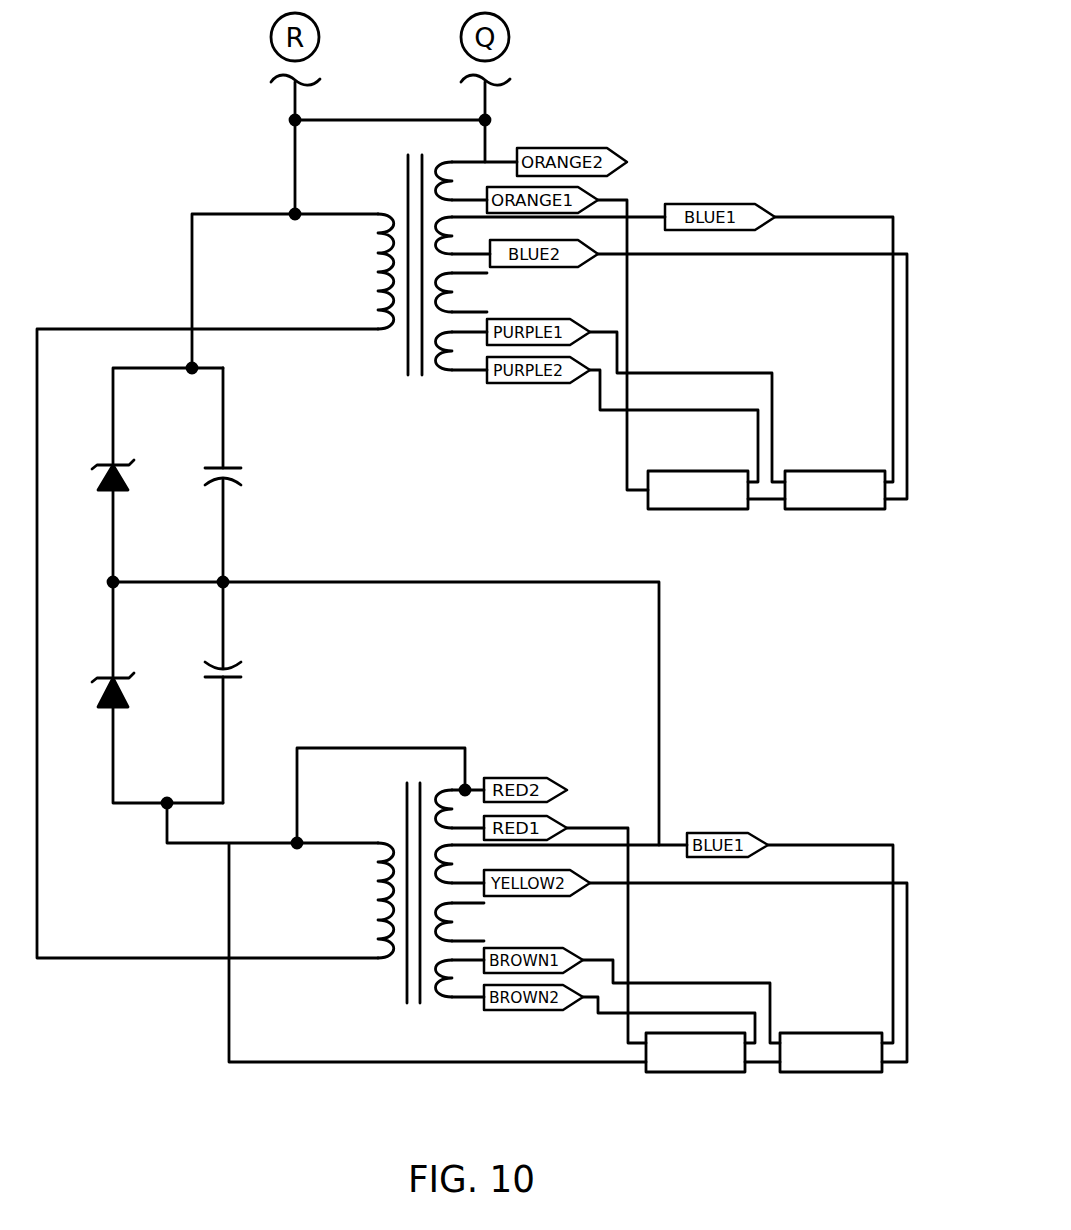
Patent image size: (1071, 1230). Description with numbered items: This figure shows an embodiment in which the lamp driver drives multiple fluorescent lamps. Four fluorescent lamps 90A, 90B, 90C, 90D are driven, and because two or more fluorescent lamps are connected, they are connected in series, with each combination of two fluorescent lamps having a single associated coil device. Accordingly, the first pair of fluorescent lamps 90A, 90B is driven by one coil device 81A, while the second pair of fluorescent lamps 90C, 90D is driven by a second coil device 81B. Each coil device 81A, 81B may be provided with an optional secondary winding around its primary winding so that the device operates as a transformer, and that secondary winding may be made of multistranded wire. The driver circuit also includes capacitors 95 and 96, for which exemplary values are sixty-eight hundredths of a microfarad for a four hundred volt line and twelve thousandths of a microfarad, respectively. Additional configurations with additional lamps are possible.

The coil device 81A is at (390, 352).
The coil device 81B is at (383, 982).
The fluorescent lamp 90A is at (685, 510).
The fluorescent lamp 90B is at (840, 510).
The fluorescent lamp 90C is at (672, 1073).
The fluorescent lamp 90D is at (828, 1073).
The capacitor 95 is at (255, 472).
The capacitor 96 is at (250, 668).